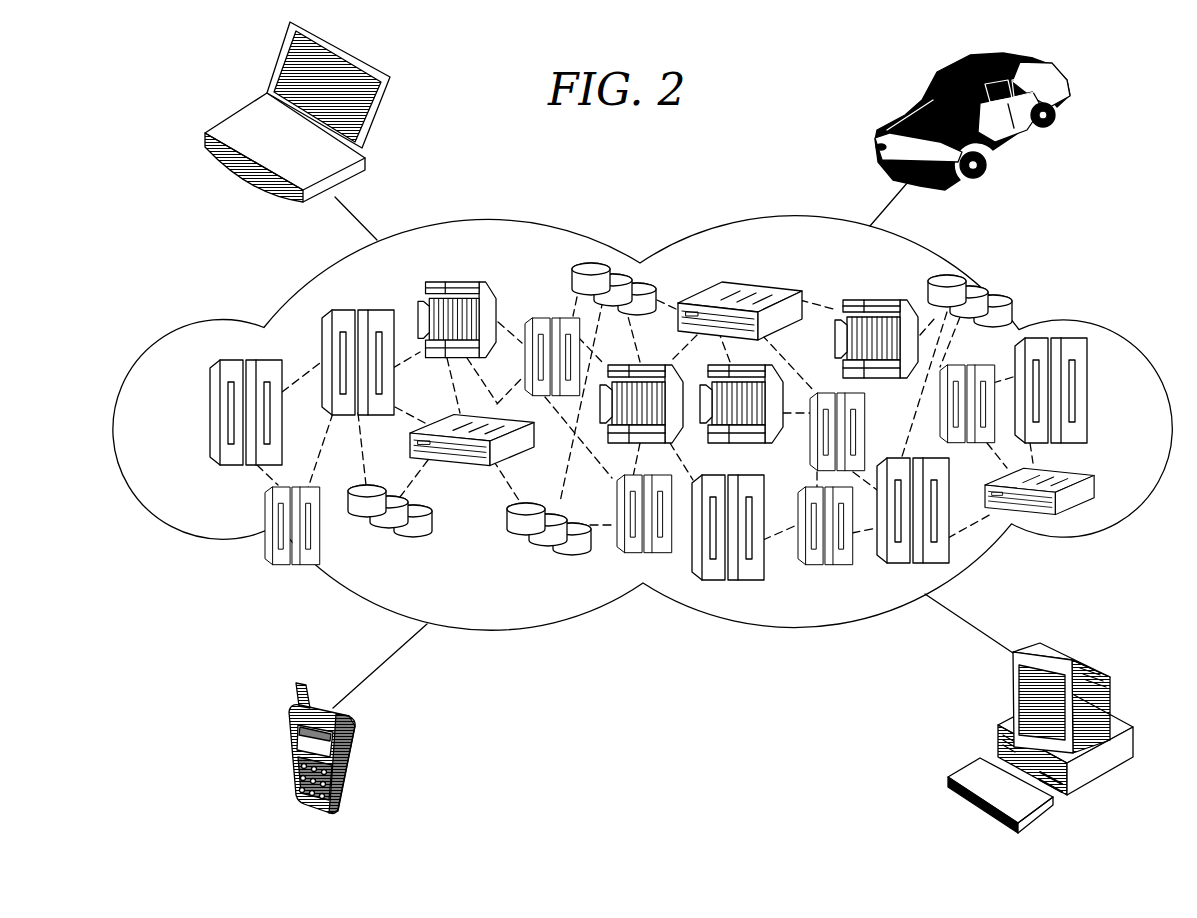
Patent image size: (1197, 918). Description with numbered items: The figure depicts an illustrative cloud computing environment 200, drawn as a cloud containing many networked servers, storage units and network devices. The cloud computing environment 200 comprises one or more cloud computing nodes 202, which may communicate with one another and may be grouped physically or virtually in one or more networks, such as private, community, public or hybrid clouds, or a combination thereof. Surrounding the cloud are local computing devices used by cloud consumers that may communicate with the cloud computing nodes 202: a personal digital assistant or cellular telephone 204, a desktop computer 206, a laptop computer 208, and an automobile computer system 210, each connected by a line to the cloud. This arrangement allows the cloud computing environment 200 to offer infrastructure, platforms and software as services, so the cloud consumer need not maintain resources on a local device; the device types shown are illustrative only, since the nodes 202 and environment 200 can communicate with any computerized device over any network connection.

The cloud computing environment 200 is at (1115, 330).
The cloud computing nodes 202 is at (1070, 500).
The personal digital assistant (PDA) or cellular telephone 204 is at (348, 722).
The desktop computer 206 is at (1008, 720).
The laptop computer 208 is at (246, 107).
The automobile computer system 210 is at (896, 116).